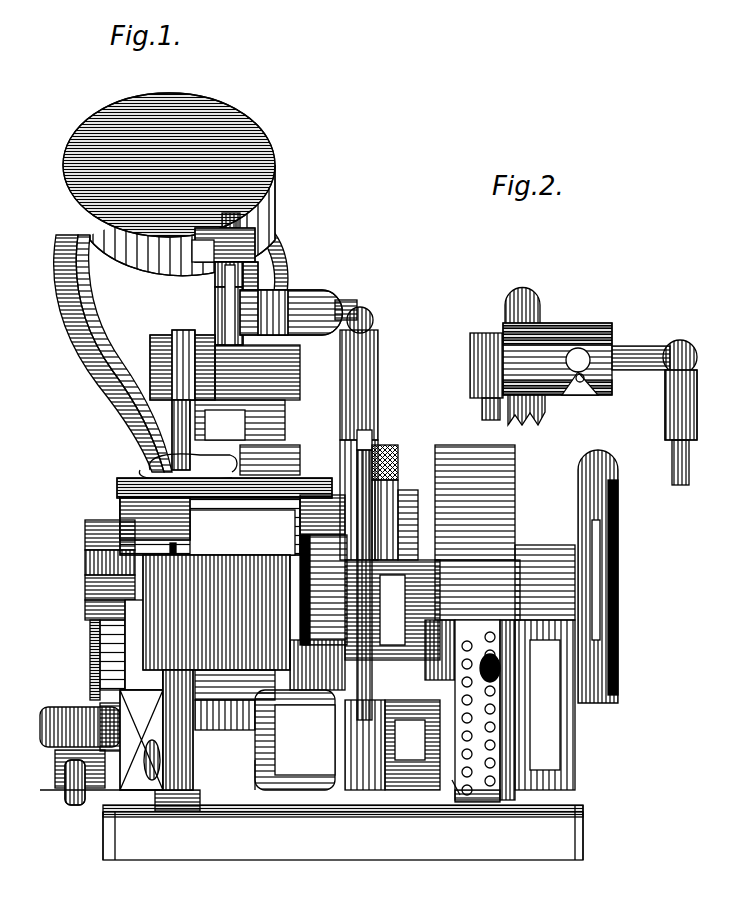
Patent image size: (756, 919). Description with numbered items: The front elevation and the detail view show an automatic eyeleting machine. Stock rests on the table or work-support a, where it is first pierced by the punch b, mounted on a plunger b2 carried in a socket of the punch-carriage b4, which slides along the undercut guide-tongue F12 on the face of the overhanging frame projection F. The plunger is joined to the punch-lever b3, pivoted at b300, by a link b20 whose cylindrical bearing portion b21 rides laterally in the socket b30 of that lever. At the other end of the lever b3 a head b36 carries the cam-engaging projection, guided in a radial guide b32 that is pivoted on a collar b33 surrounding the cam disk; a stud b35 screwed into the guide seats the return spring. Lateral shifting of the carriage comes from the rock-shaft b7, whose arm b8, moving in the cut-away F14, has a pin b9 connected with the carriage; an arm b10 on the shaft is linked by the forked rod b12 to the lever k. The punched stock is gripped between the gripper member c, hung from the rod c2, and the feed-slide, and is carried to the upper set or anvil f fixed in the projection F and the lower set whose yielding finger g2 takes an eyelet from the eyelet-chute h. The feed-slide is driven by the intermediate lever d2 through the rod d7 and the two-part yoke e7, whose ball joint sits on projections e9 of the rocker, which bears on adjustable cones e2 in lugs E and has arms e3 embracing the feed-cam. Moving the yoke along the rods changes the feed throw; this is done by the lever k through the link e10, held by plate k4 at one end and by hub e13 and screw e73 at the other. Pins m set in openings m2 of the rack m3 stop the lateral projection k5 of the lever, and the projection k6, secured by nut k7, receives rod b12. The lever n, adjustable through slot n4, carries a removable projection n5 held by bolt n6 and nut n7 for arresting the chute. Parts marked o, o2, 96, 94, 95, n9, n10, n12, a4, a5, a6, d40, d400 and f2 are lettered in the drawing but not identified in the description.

In FIG. 1, the punch-lever b3 is at (240, 218).
In FIG. 1, the upper set or anvil f is at (150, 425).
In FIG. 2, the upper set or anvil f is at (478, 420).
In FIG. 1, the eyelet-chute h is at (160, 455).
In FIG. 1, the socket b30 is at (255, 245).
In FIG. 1, the cylindrical bearing portion b21 is at (192, 252).
In FIG. 1, the link b20 is at (243, 270).
In FIG. 1, the plunger b2 is at (235, 300).
In FIG. 1, the punch-carriage b4 is at (258, 280).
In FIG. 1, the lever head F12 is at (275, 322).
In FIG. 2, the lever head F12 is at (555, 335).
In FIG. 1, the pivot b300 is at (330, 305).
In FIG. 1, the arm b10 is at (355, 318).
In FIG. 2, the arm b10 is at (640, 358).
In FIG. 1, the head b36 is at (372, 318).
In FIG. 1, the stud b35 is at (378, 375).
In FIG. 1, the guide b32 is at (370, 410).
In FIG. 1, the link or rod b12 is at (372, 440).
In FIG. 2, the link or rod b12 is at (688, 470).
In FIG. 1, the rod d7 is at (372, 470).
In FIG. 1, the projections e9 is at (410, 462).
In FIG. 1, the intermediate lever d2 is at (398, 500).
In FIG. 1, the arms e3 is at (405, 530).
In FIG. 1, the connecting member e7 is at (385, 600).
In FIG. 1, the arm b8 is at (215, 400).
In FIG. 2, the arm b8 is at (590, 385).
In FIG. 1, the pin b9 is at (260, 400).
In FIG. 2, the pin b9 is at (582, 382).
In FIG. 1, the punch b is at (200, 435).
In FIG. 1, the plate o2 is at (245, 432).
In FIG. 1, the gripper member c is at (140, 470).
In FIG. 1, the table or work-support a is at (118, 490).
In FIG. 1, the body o is at (228, 470).
In FIG. 1, the block 96 is at (130, 520).
In FIG. 1, the yielding finger g2 is at (176, 549).
In FIG. 1, the wedge d40 is at (300, 515).
In FIG. 1, the collar b33 is at (323, 590).
In FIG. 1, the block n10 is at (90, 535).
In FIG. 1, the block n12 is at (95, 562).
In FIG. 1, the slot n4 is at (95, 585).
In FIG. 1, the bolt n6 is at (85, 608).
In FIG. 1, the block n9 is at (95, 660).
In FIG. 1, the block 94 is at (125, 692).
In FIG. 1, the lateral projection n5 is at (55, 782).
In FIG. 1, the lever n is at (70, 805).
In FIG. 1, the nut n7 is at (130, 760).
In FIG. 1, the roller 95 is at (155, 805).
In FIG. 1, the bar a4 is at (260, 640).
In FIG. 1, the block a5 is at (240, 690).
In FIG. 1, the block a6 is at (255, 710).
In FIG. 1, the block d400 is at (320, 690).
In FIG. 1, the rod c2 is at (295, 740).
In FIG. 1, the adjustable cones e2 is at (280, 800).
In FIG. 1, the lugs E is at (352, 800).
In FIG. 1, the lateral projection k6 is at (370, 780).
In FIG. 1, the lever k is at (400, 780).
In FIG. 1, the block f2 is at (475, 492).
In FIG. 1, the hub e13 is at (440, 600).
In FIG. 1, the screw e73 is at (430, 615).
In FIG. 1, the link e10 is at (440, 640).
In FIG. 1, the openings m2 is at (470, 625).
In FIG. 1, the stops m is at (490, 668).
In FIG. 1, the lateral projection k5 is at (530, 705).
In FIG. 1, the nut k7 is at (450, 800).
In FIG. 1, the rack or support m3 is at (485, 800).
In FIG. 1, the plate k4 is at (598, 576).
In FIG. 2, the overhanging projection F is at (490, 368).
In FIG. 2, the rock-shaft b7 is at (585, 355).
In FIG. 2, the lever foot F14 is at (565, 400).